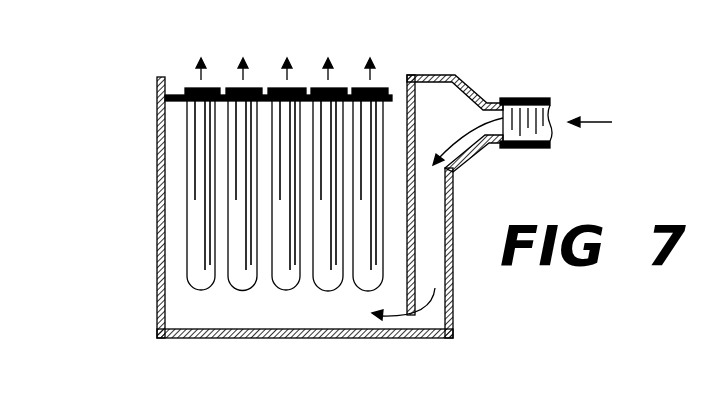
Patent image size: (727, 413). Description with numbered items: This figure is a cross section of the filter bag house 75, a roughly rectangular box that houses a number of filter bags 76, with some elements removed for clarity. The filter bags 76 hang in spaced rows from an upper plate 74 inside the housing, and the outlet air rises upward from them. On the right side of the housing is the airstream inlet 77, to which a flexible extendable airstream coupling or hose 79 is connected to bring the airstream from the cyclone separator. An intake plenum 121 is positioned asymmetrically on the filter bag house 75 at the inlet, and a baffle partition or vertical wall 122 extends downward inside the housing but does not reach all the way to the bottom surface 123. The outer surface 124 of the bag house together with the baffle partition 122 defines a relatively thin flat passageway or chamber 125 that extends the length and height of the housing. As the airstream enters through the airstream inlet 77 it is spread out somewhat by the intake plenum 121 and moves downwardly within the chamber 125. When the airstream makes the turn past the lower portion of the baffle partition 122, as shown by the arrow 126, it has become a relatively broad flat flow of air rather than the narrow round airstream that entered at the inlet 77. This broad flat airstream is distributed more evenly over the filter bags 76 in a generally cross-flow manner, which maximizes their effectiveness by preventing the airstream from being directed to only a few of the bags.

The plate 74 is at (172, 94).
The filter bag house 75 is at (153, 130).
The filter bags 76 is at (386, 90).
The airstream inlet 77 is at (492, 140).
The flexible extendable airstream coupling or hose 79 is at (530, 98).
The intake plenum 121 is at (463, 88).
The baffle partition or vertical wall 122 is at (417, 243).
The bottom surface 123 is at (267, 340).
The outer surface 124 is at (455, 280).
The passageway or chamber 125 is at (440, 201).
The arrow 126 is at (417, 327).